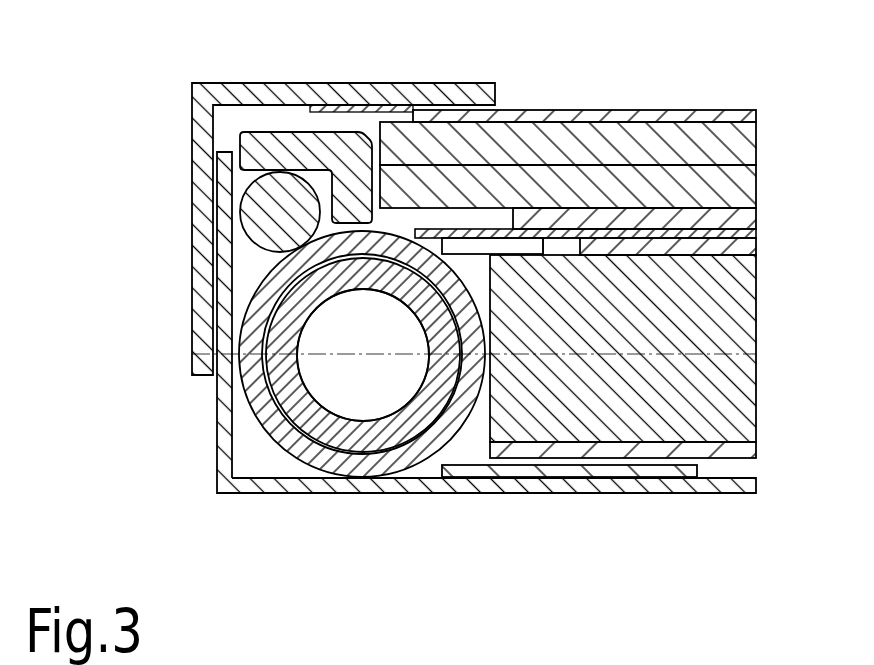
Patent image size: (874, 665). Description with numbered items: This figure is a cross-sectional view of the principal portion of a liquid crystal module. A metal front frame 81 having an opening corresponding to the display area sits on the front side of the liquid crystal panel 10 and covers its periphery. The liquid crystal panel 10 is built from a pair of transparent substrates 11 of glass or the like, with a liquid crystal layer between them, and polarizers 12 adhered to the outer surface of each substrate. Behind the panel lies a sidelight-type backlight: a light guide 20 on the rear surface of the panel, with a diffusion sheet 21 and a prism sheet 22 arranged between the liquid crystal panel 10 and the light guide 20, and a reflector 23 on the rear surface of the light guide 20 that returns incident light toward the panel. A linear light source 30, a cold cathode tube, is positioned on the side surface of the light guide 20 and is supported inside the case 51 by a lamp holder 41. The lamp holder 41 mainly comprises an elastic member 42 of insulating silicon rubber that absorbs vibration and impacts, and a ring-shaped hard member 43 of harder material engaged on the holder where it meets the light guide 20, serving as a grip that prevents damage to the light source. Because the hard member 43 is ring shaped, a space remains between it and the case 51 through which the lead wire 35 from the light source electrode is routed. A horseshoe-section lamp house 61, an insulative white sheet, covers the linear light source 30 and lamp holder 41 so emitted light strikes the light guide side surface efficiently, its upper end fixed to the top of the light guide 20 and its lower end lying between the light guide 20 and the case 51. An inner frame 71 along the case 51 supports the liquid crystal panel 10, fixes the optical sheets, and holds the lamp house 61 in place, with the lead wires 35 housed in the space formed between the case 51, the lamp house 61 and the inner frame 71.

The liquid crystal panel 10 is at (705, 48).
The transparent substrate 11 is at (747, 147).
The polarizer 12 is at (756, 113).
The light guide 20 is at (756, 338).
The diffusion sheet 21 is at (757, 253).
The prism sheet 22 is at (757, 233).
The reflector 23 is at (756, 449).
The linear light source 30 is at (373, 413).
The lead wire 35 is at (247, 212).
The lamp holder 41 is at (263, 460).
The elastic member 42 is at (343, 440).
The ring-shaped hard member 43 is at (263, 420).
The case 51 is at (756, 490).
The lamp house 61 is at (492, 247).
The inner frame 71 is at (243, 130).
The front frame 81 is at (310, 82).